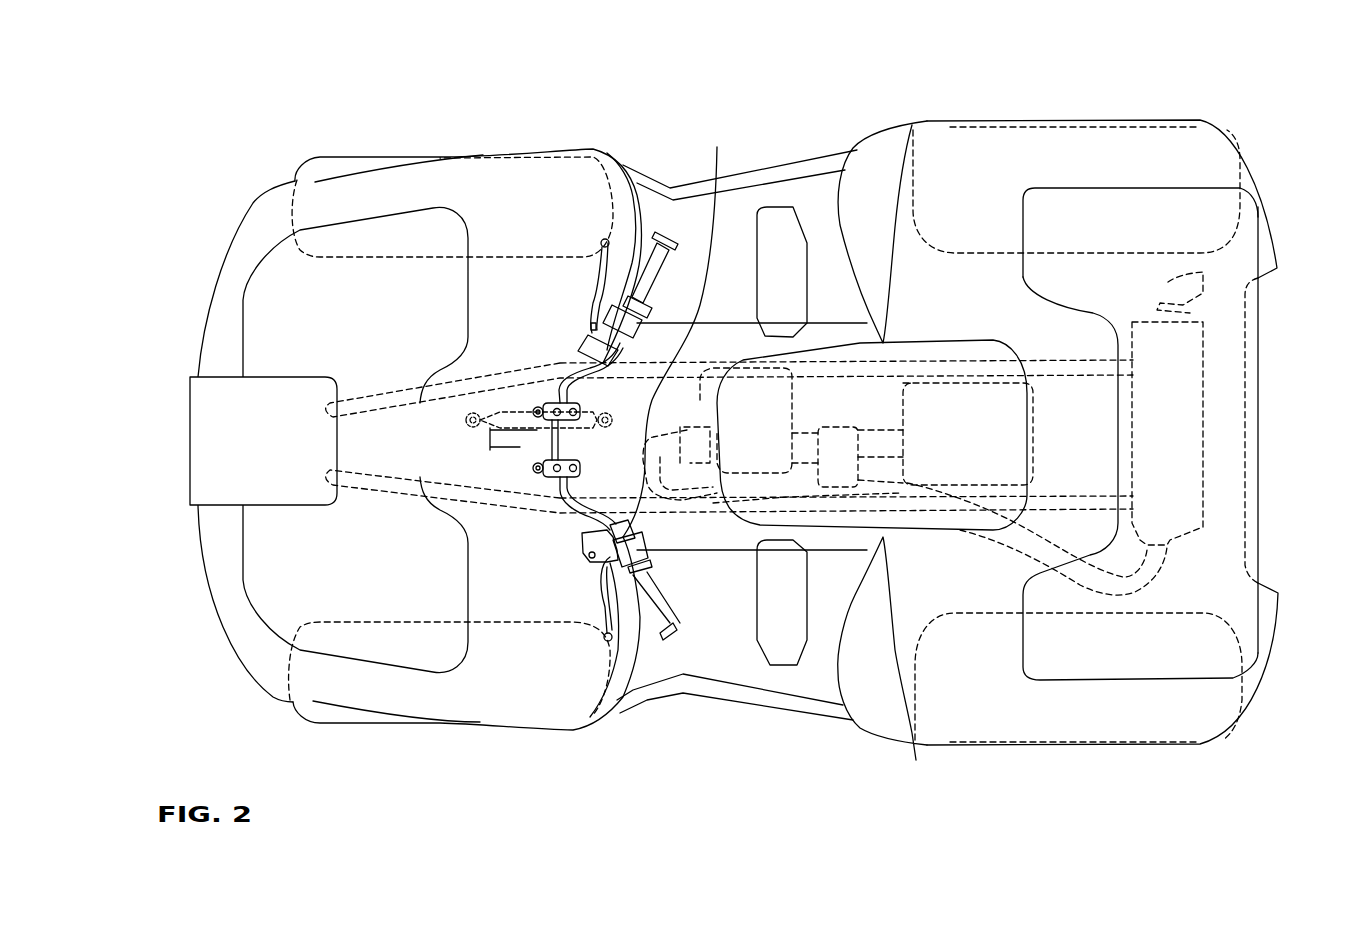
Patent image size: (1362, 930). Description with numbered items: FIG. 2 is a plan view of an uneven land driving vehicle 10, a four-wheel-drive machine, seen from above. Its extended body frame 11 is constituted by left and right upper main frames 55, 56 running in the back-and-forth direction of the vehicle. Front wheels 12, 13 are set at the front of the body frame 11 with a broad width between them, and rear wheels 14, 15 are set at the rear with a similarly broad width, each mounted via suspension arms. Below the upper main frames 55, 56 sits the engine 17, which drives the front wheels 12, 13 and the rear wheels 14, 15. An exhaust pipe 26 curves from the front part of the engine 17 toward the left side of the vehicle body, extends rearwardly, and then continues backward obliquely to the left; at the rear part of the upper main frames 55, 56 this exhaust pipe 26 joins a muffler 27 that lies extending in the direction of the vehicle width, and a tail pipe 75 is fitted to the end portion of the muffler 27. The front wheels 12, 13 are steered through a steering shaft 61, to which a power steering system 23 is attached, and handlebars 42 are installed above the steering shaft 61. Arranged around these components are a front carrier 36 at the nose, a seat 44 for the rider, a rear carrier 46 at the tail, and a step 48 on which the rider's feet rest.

The uneven land driving vehicle 10 is at (312, 148).
The body frame 11 is at (359, 393).
The front wheel 12 is at (363, 727).
The front wheel 13 is at (382, 158).
The rear wheel 14 is at (916, 760).
The rear wheel 15 is at (912, 125).
The engine 17 is at (804, 405).
The power steering system 23 is at (512, 405).
The exhaust pipe 26 is at (717, 147).
The muffler 27 is at (1207, 403).
The front carrier 36 is at (203, 323).
The handlebar 42 is at (670, 273).
The seat 44 is at (972, 340).
The rear carrier 46 is at (1095, 188).
The step 48 is at (748, 228).
The upper main frame 55 is at (487, 507).
The upper main frame 56 is at (486, 373).
The steering shaft 61 is at (520, 447).
The tail pipe 75 is at (1168, 282).